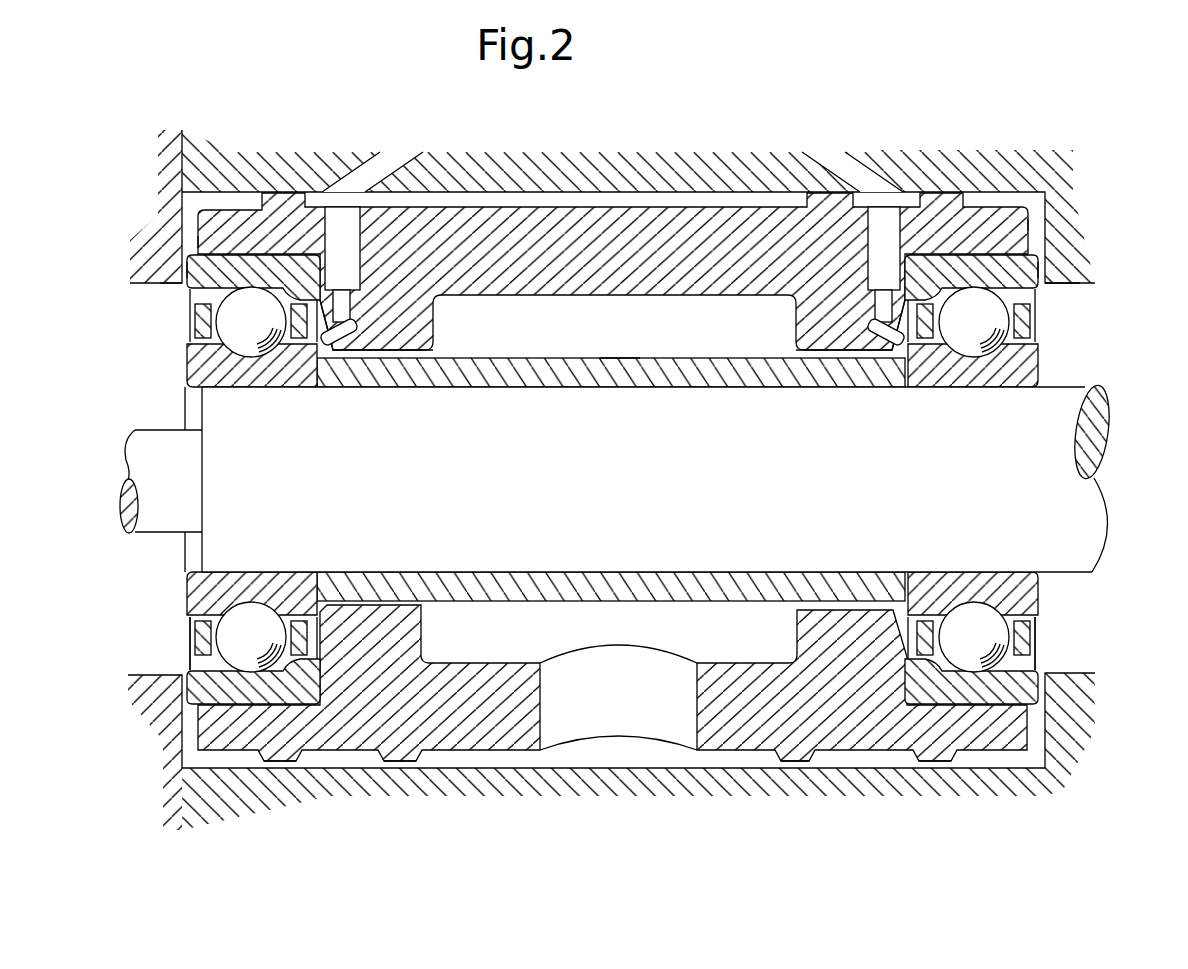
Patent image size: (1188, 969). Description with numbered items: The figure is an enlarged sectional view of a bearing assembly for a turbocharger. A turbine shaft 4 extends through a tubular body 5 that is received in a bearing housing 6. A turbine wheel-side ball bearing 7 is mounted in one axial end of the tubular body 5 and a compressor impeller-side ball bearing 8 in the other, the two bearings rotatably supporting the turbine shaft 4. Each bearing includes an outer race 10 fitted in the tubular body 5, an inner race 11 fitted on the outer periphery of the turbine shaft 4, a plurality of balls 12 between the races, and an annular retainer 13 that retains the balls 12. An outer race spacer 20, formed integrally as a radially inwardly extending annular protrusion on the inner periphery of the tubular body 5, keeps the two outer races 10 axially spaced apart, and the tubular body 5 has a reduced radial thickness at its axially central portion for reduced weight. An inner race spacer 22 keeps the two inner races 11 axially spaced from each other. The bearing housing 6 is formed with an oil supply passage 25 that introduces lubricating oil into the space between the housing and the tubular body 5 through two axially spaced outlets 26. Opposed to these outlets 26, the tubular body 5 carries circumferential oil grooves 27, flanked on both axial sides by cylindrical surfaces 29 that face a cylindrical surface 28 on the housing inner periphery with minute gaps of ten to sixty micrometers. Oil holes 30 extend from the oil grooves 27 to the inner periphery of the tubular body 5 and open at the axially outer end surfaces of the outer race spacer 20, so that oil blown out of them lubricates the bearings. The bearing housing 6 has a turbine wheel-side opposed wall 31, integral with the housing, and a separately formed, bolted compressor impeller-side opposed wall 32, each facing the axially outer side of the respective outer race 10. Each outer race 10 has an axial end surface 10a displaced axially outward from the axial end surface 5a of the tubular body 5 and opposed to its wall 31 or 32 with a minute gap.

The turbine shaft 4 is at (135, 458).
The tubular body 5 is at (549, 233).
The axial end surface of the tubular body 5a is at (197, 242).
The bearing housing 6 is at (627, 170).
The turbine wheel-side ball bearing 7 is at (1048, 640).
The compressor impeller-side ball bearing 8 is at (182, 642).
The outer race 10 is at (248, 272).
The axial end surface of the outer race 10a is at (187, 270).
The inner race 11 is at (197, 368).
The balls 12 is at (250, 347).
The annular retainer 13 is at (295, 340).
The outer race spacer 20 is at (397, 330).
The inner race spacer 22 is at (618, 376).
The oil supply passage 25 is at (397, 168).
The outlets 26 is at (343, 192).
The oil grooves 27 is at (341, 751).
The cylindrical surface 28 is at (500, 754).
The cylindrical surfaces 29 is at (272, 763).
The oil holes 30 is at (352, 340).
The turbine wheel-side opposed wall 31 is at (1070, 283).
The compressor impeller-side opposed wall 32 is at (160, 284).